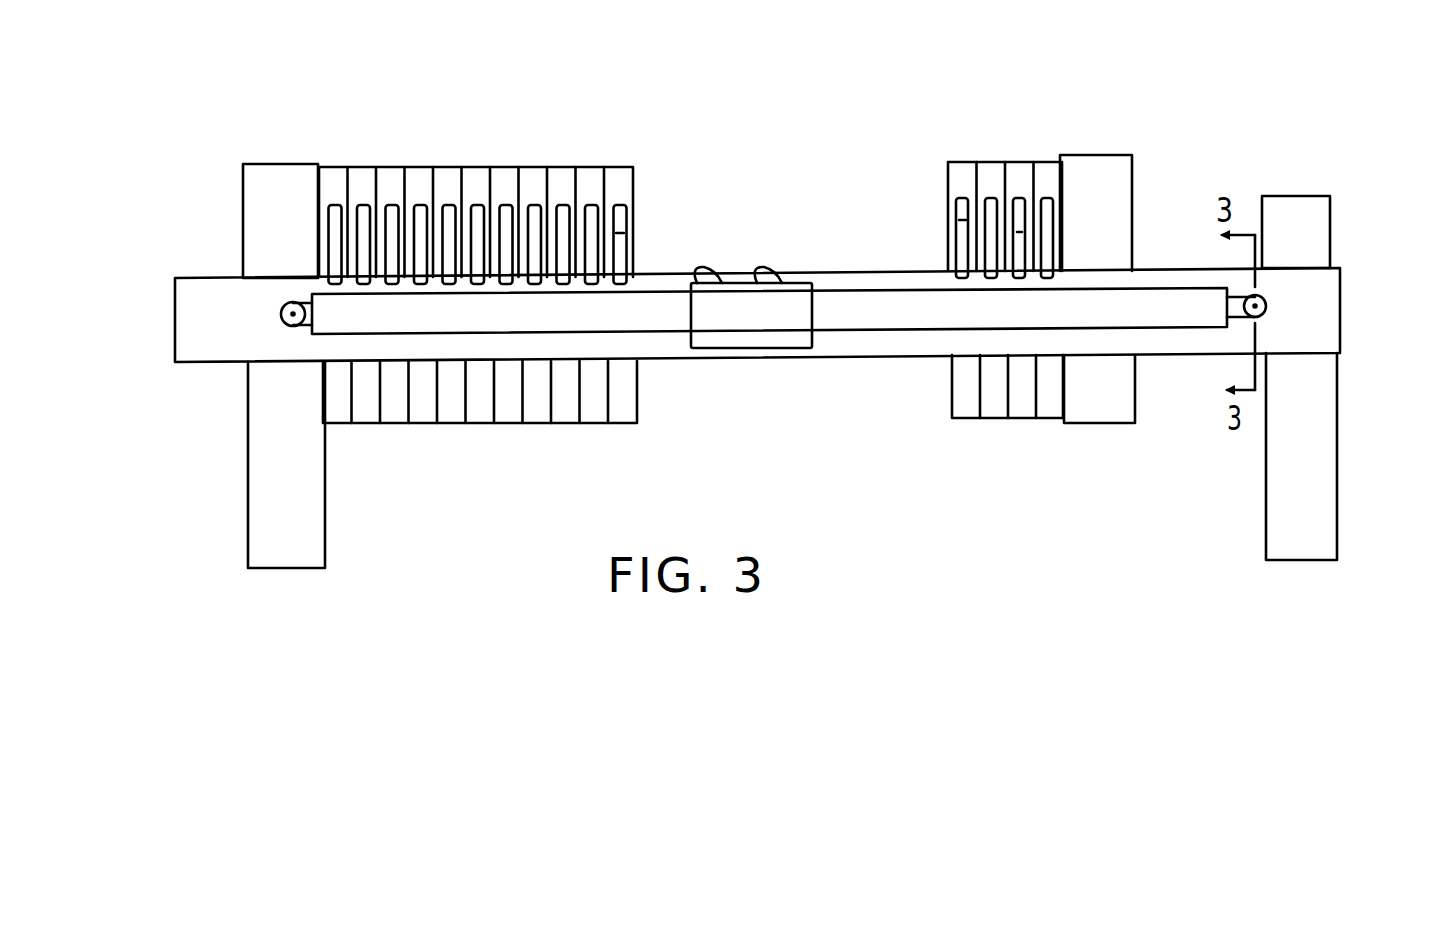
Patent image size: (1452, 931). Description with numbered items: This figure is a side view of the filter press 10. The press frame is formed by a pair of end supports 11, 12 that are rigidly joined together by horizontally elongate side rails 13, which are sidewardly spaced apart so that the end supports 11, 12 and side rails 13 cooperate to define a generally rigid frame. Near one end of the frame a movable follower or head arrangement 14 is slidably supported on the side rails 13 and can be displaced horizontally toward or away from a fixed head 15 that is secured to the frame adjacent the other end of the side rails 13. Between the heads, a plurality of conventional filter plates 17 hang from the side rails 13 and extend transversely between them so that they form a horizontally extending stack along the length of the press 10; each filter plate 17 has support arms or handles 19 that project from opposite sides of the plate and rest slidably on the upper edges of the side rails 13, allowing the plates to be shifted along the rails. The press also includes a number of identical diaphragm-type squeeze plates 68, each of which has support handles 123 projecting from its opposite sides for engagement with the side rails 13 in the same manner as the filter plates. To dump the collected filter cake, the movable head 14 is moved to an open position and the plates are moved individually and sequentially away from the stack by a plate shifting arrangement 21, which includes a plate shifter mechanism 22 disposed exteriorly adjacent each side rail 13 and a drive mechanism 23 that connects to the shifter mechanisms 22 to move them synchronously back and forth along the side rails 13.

The filter press 10 is at (1222, 110).
The end support 11 is at (1318, 431).
The end support 12 is at (266, 476).
The side rails 13 is at (1322, 295).
The movable follower or head arrangement 14 is at (1097, 415).
The fixed head 15 is at (248, 198).
The filter plates 17 is at (562, 173).
The support arms or handles 19 is at (619, 233).
The plate shifting arrangement 21 is at (892, 392).
The plate shifter mechanism 22 is at (760, 323).
The drive mechanism 23 is at (1245, 328).
The diaphragm-type squeeze plate 68 is at (528, 175).
The support handles 123 is at (962, 221).